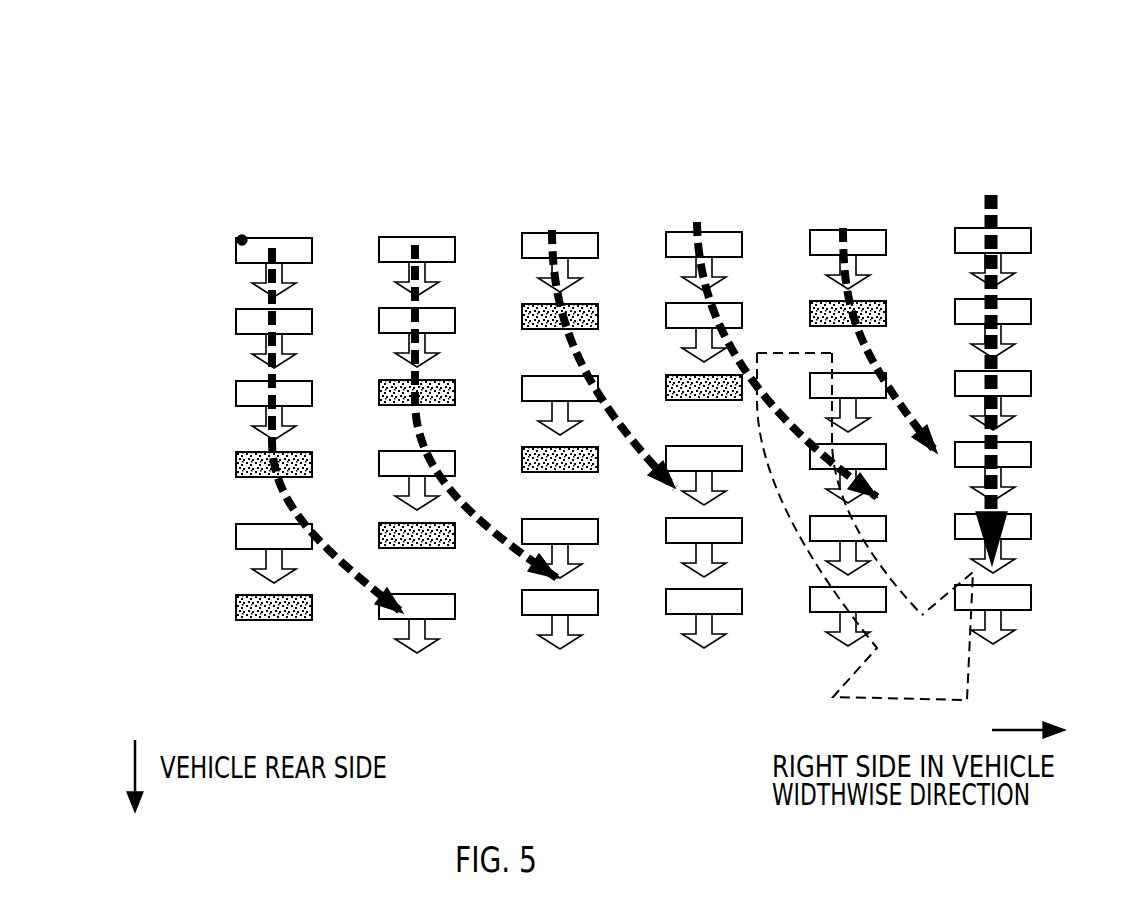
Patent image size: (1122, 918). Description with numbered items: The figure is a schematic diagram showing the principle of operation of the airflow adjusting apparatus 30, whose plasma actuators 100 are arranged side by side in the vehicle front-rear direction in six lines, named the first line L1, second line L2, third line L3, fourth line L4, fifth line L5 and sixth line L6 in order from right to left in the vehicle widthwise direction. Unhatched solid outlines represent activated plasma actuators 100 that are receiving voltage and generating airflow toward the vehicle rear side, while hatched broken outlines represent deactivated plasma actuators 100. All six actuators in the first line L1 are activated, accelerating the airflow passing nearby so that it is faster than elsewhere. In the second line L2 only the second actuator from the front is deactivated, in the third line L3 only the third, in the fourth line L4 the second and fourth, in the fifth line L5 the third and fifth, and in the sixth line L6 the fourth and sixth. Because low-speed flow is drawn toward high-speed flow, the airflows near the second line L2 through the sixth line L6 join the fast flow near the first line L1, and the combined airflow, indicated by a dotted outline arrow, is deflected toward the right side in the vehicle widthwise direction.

The airflow adjusting apparatus 30 is at (265, 195).
The plasma actuator 100 is at (242, 240).
The first line L1 is at (1008, 213).
The second line L2 is at (858, 218).
The third line L3 is at (715, 222).
The fourth line L4 is at (567, 222).
The fifth line L5 is at (438, 222).
The sixth line L6 is at (282, 222).